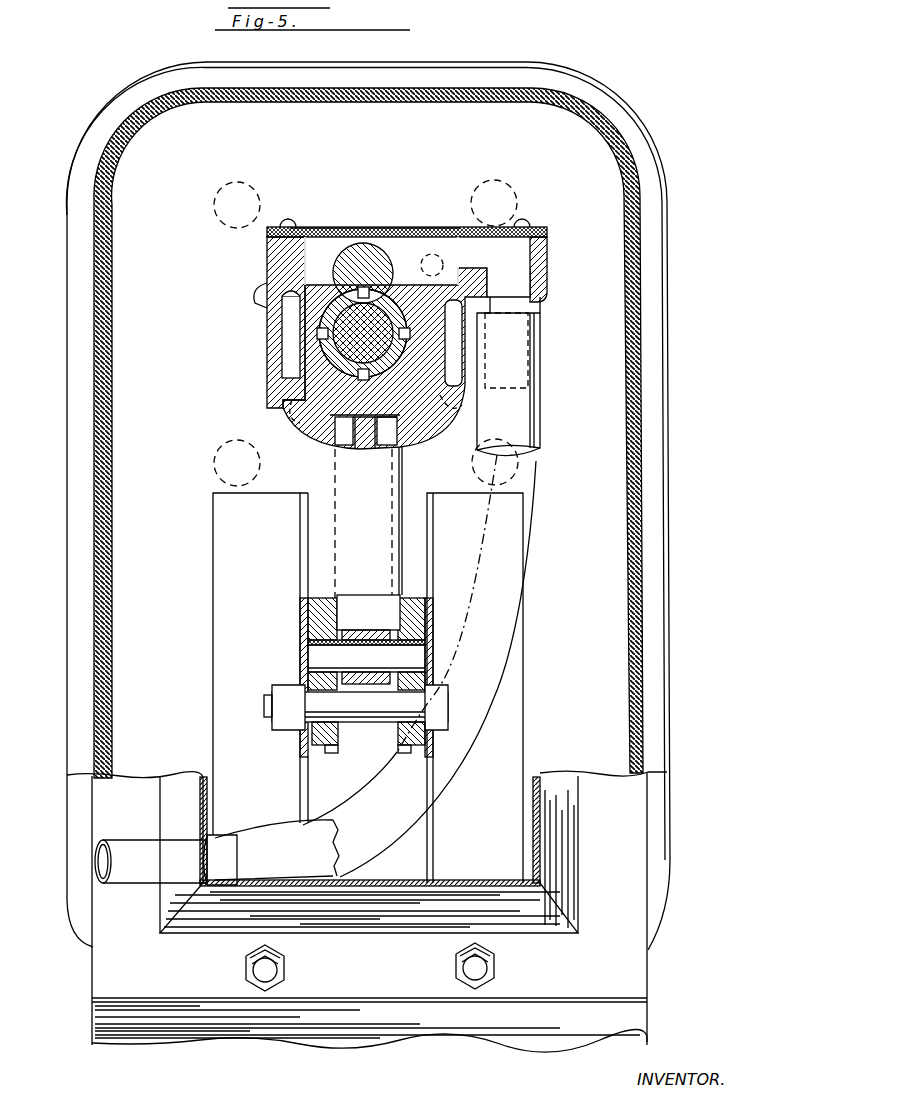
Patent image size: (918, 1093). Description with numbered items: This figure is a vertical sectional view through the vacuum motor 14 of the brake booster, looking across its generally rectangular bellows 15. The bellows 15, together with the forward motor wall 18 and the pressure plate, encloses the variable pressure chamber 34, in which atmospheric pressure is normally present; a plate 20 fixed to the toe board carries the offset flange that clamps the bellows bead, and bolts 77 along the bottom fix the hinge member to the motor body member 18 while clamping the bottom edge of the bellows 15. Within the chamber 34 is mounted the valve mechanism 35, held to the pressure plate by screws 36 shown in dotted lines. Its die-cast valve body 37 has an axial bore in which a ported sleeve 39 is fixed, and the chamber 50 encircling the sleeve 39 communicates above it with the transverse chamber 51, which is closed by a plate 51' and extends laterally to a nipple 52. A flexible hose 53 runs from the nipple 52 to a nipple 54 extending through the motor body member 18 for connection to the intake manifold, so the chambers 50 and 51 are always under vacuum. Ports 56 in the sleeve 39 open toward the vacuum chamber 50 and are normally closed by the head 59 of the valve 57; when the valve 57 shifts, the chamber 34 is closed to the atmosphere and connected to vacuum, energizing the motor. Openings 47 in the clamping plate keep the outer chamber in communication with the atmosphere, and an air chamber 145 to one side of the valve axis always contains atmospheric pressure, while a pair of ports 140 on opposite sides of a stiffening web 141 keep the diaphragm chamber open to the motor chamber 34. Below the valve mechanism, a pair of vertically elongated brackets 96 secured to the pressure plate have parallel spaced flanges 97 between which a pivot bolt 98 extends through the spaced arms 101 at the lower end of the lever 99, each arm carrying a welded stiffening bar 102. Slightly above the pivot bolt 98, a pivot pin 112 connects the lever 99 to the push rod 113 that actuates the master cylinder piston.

The motor 14 is at (593, 72).
The bellows 15 is at (628, 110).
The forward motor wall 18 is at (173, 772).
The plate 20 is at (95, 1032).
The variable pressure chamber 34 is at (182, 330).
The valve mechanism 35 is at (349, 343).
The screws 36 is at (432, 254).
The valve body 37 is at (267, 250).
The sleeve 39 is at (375, 290).
The openings 47 is at (252, 195).
The chamber 50 is at (330, 338).
The transverse chamber 51 is at (407, 219).
The plate 51' is at (375, 214).
The nipple 52 is at (515, 281).
The flexible hose 53 is at (538, 413).
The nipple 54 is at (150, 842).
The ports 56 is at (363, 286).
The valve 57 is at (348, 296).
The head 59 is at (388, 300).
The bolts 77 is at (248, 968).
The brackets 96 is at (213, 542).
The flanges 97 is at (300, 622).
The pivot bolt 98 is at (440, 705).
The lever 99 is at (405, 470).
The spaced arms 101 is at (330, 748).
The stiffening bar 102 is at (318, 610).
The pivot pin 112 is at (318, 652).
The push rod 113 is at (360, 630).
The ports 140 is at (349, 445).
The stiffening web 141 is at (395, 450).
The air chamber 145 is at (286, 360).